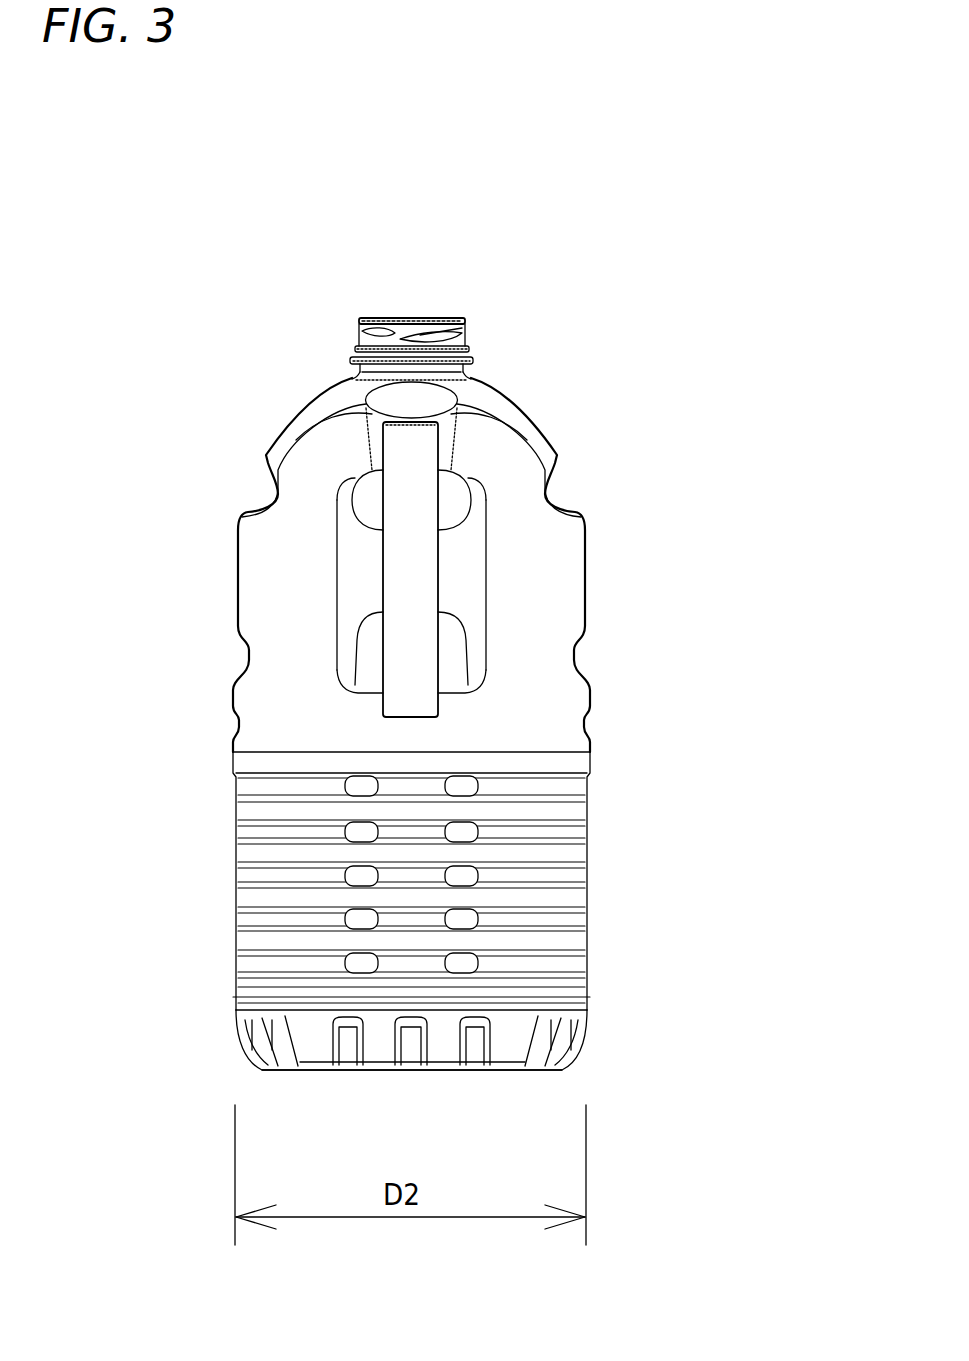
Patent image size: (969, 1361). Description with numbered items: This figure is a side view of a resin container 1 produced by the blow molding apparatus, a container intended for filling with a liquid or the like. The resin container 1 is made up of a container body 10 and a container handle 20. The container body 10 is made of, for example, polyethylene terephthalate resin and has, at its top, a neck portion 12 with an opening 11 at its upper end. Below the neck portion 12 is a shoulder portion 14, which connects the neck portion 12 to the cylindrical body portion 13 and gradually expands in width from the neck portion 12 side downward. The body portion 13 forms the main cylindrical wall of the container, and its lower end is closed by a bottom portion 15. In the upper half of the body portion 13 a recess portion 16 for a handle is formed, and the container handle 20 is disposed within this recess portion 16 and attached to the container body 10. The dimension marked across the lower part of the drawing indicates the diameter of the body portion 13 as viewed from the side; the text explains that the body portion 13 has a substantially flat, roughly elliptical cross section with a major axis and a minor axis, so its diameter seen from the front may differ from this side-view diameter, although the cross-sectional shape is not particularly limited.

The resin container 1 is at (656, 176).
The container body 10 is at (612, 762).
The opening 11 is at (416, 318).
The neck portion 12 is at (465, 337).
The body portion 13 is at (248, 902).
The shoulder portion 14 is at (520, 398).
The bottom portion 15 is at (440, 1072).
The recess portion 16 is at (543, 583).
The container handle 20 is at (410, 497).